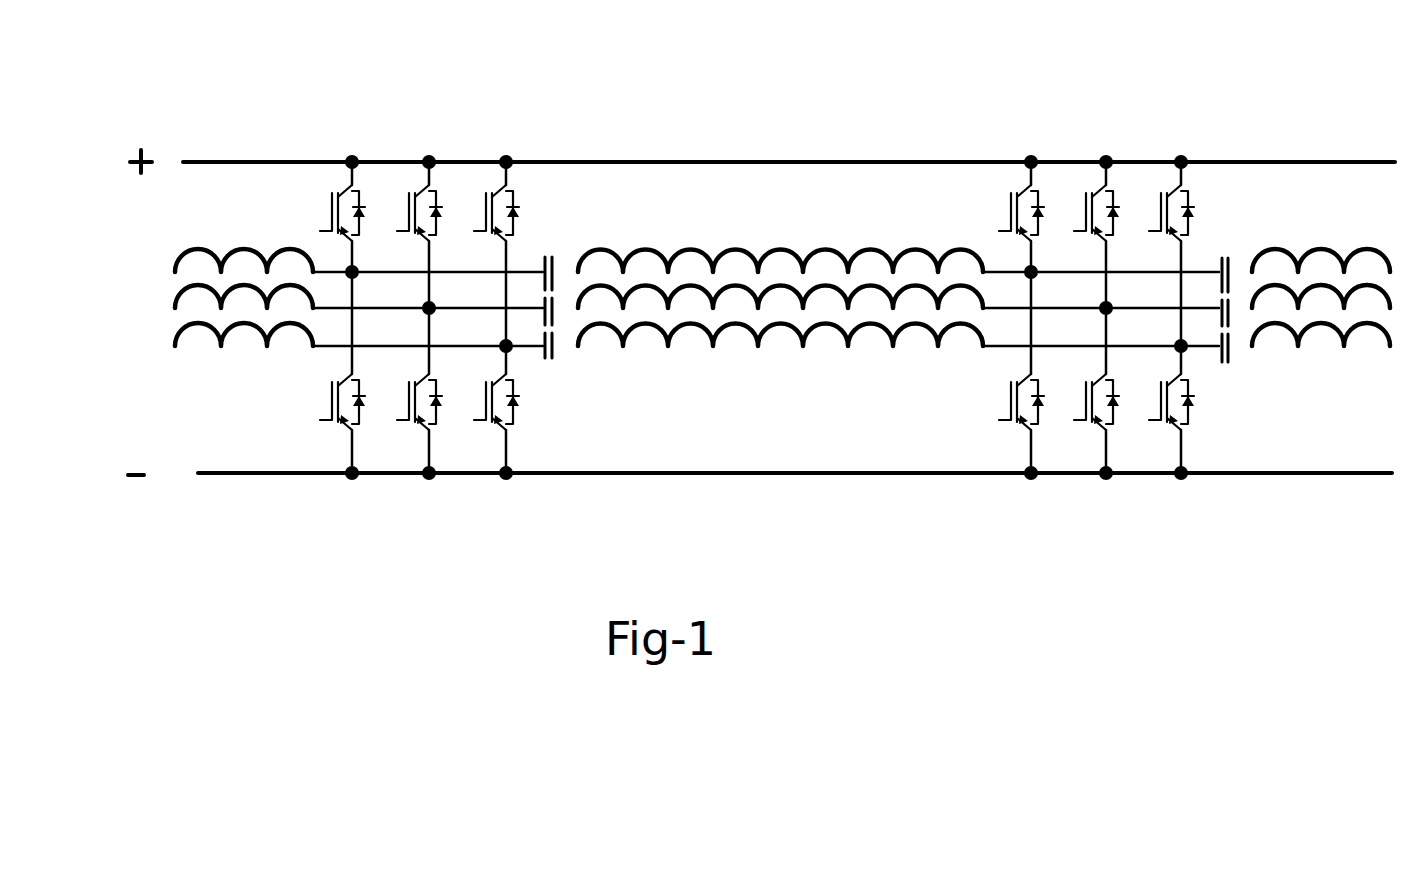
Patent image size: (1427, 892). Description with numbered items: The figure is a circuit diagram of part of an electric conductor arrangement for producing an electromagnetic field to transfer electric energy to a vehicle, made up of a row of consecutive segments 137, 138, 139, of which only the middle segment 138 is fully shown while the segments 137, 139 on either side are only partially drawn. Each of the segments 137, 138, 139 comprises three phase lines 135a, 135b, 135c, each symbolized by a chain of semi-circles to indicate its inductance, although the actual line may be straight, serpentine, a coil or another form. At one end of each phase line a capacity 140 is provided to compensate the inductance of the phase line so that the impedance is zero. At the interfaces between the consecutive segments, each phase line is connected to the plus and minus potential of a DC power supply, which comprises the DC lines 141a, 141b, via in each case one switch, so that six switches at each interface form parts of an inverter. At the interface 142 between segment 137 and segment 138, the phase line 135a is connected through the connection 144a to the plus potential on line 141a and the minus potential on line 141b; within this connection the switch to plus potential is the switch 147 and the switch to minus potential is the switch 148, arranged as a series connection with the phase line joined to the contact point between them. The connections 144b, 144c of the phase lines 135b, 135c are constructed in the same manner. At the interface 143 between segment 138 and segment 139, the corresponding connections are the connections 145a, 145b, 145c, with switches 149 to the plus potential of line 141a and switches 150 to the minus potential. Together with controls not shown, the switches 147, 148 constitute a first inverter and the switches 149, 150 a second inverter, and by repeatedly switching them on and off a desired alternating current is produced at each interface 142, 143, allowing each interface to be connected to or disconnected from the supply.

The phase line 135a is at (600, 252).
The phase line 135b is at (733, 292).
The phase line 135c is at (780, 367).
The segment 137 is at (340, 490).
The segment 138 is at (774, 384).
The segment 139 is at (1196, 490).
The capacity 140 is at (555, 249).
The DC line 141a is at (568, 160).
The DC line 141b is at (1079, 480).
The interface 142 is at (431, 516).
The interface 143 is at (1110, 116).
The connection 144a is at (355, 257).
The connection 144b is at (432, 185).
The connection 144c is at (508, 370).
The connection 145a is at (1026, 182).
The connection 145b is at (1106, 184).
The connection 145c is at (1184, 450).
The switch 147 is at (300, 220).
The switch 148 is at (300, 411).
The switch 149 is at (1218, 221).
The switch 150 is at (1230, 404).